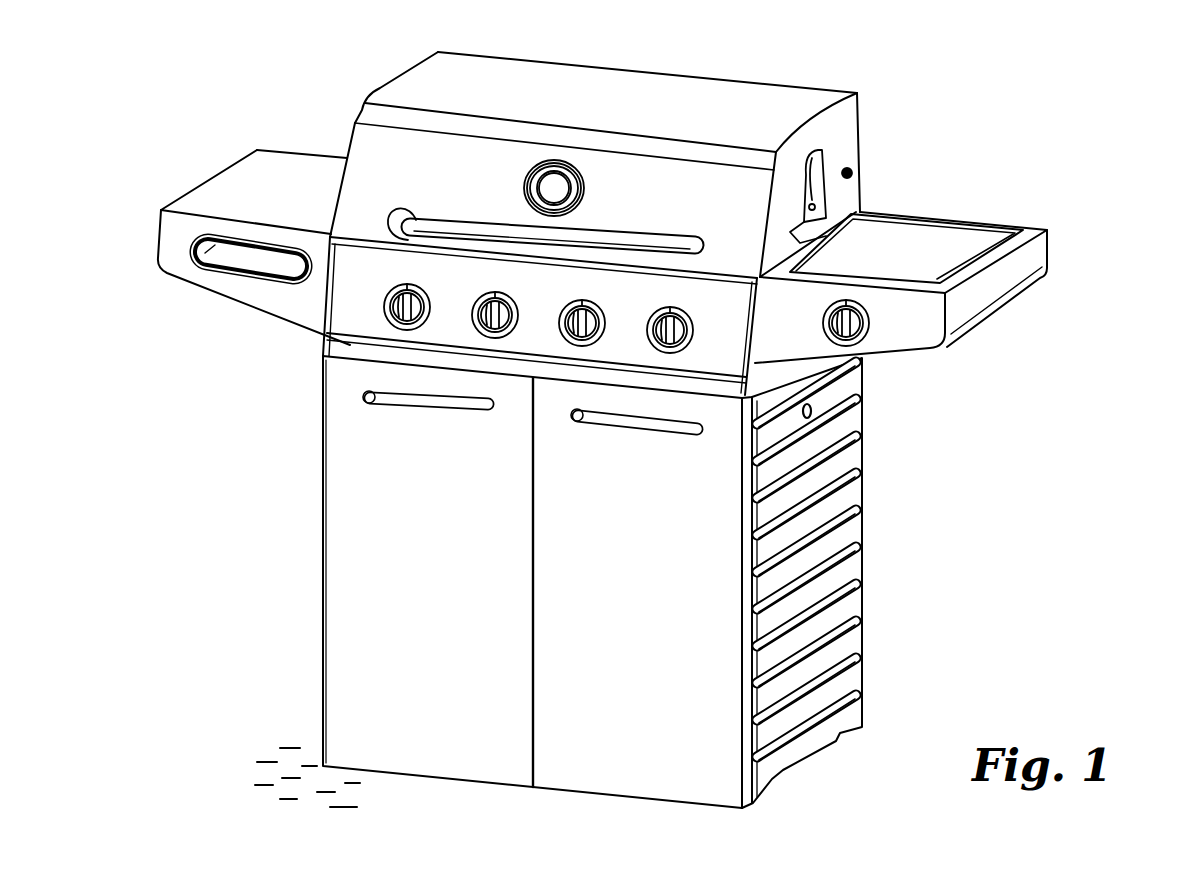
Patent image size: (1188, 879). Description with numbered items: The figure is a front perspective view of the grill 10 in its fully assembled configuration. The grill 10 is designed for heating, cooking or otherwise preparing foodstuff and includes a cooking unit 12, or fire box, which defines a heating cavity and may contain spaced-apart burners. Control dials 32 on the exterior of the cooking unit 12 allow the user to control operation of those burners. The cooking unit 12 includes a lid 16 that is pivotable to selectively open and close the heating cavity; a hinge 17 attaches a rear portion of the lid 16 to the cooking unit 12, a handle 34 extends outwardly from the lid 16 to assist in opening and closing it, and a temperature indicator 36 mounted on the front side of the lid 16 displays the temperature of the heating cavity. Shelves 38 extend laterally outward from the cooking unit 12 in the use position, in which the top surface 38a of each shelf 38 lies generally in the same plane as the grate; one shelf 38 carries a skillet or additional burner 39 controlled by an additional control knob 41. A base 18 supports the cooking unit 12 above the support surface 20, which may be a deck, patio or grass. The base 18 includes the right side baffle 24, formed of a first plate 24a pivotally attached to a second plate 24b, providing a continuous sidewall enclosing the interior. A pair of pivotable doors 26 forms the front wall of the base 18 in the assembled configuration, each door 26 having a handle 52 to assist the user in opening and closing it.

The grill 10 is at (985, 140).
The cooking unit 12 is at (305, 108).
The lid 16 is at (753, 103).
The hinge 17 is at (852, 176).
The base 18 is at (215, 478).
The support surface 20 is at (268, 760).
The right side baffle 24 is at (973, 410).
The first plate 24a is at (852, 458).
The second plate 24b is at (853, 612).
The pivotable doors 26 is at (347, 557).
The control dials 32 is at (483, 336).
The handle 34 is at (490, 235).
The temperature indicator 36 is at (578, 170).
The shelves 38 is at (157, 200).
The top surface 38a is at (240, 188).
The skillet or additional burner 39 is at (948, 240).
The additional control knob 41 is at (868, 343).
The handle 52 is at (360, 412).